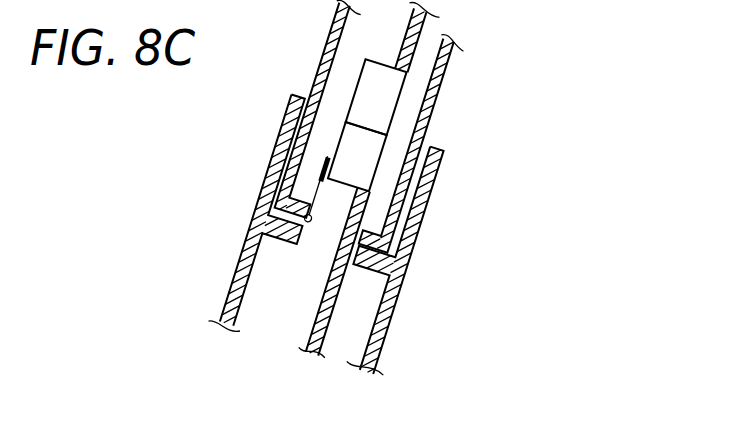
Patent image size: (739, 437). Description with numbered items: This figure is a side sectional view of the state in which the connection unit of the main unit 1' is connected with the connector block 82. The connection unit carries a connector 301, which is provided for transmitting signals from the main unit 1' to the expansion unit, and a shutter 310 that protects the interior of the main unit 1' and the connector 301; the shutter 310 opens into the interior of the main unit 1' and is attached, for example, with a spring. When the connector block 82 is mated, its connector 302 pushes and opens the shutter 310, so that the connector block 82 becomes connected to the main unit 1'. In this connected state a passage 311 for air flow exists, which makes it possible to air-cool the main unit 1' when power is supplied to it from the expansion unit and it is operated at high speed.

The main unit 1' is at (432, 142).
The connector 301 is at (400, 100).
The connector of the connector block 302 is at (379, 163).
The shutter 310 is at (287, 196).
The passage 311 is at (324, 236).
The connector block 82 is at (393, 290).